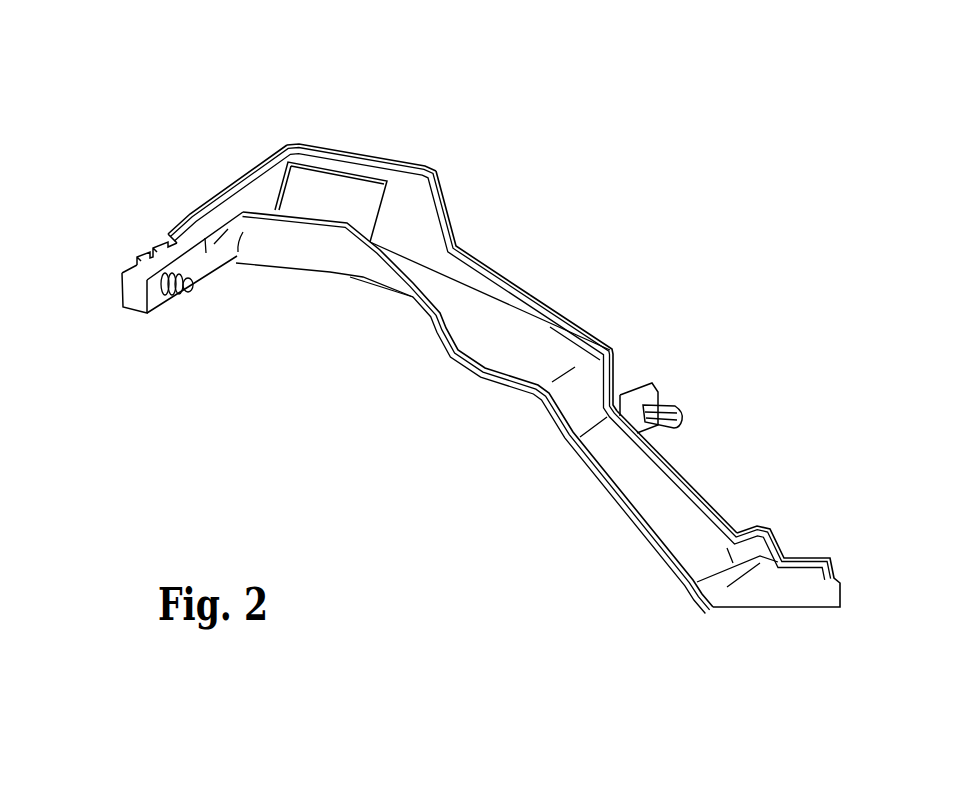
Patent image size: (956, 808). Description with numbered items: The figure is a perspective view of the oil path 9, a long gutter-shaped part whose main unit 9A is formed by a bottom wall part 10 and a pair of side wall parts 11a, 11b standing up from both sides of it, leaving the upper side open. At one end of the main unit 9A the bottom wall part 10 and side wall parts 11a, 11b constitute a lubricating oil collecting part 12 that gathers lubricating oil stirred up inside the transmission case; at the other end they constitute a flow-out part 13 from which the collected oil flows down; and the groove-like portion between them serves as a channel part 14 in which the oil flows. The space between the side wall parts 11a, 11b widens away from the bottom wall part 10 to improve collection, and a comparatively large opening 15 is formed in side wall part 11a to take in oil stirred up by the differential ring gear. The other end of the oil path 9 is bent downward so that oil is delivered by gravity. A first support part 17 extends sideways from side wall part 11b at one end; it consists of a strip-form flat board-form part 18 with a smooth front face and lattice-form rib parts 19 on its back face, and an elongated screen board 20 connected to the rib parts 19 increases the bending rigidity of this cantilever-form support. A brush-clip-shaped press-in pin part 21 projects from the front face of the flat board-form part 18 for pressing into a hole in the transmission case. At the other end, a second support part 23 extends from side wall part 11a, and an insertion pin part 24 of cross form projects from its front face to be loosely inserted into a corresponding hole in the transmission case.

The oil path 9 is at (601, 51).
The main unit 9A is at (477, 243).
The bottom wall part 10 is at (483, 330).
The side wall part 11a is at (503, 290).
The side wall part 11b is at (356, 264).
The lubricating oil collecting part 12 is at (341, 133).
The flow-out part 13 is at (805, 576).
The channel part 14 is at (524, 351).
The opening 15 is at (360, 197).
The first support part 17 is at (116, 318).
The flat board-form part 18 is at (198, 262).
The lattice-form rib parts 19 is at (157, 246).
The screen board 20 is at (228, 183).
The press-in pin part 21 is at (185, 293).
The second support part 23 is at (648, 386).
The insertion pin part 24 is at (672, 404).